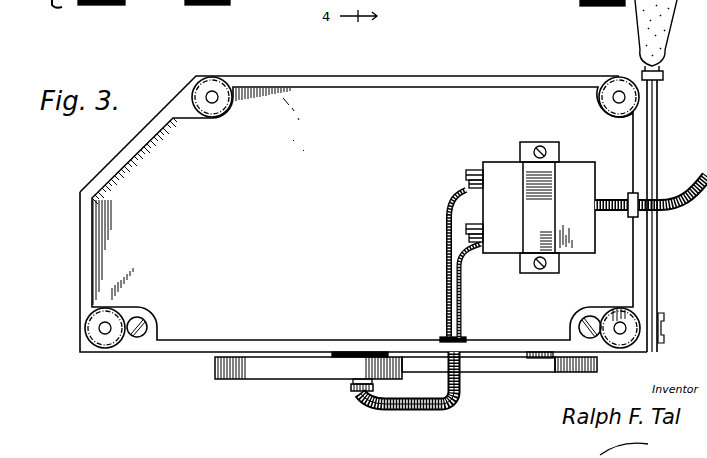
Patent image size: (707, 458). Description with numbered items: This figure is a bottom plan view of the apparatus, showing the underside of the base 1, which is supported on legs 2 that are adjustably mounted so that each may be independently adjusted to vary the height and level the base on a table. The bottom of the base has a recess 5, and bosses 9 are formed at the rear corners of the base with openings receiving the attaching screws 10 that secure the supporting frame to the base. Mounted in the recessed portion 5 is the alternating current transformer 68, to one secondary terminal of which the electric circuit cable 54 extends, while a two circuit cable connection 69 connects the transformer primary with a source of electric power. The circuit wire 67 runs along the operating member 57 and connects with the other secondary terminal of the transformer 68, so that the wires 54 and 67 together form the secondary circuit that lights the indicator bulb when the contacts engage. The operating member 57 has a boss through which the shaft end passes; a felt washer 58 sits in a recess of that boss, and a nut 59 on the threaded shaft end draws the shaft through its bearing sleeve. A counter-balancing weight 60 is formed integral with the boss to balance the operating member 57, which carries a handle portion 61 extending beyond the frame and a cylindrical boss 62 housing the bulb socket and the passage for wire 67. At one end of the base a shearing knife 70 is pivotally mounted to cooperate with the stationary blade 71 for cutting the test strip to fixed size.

The base 1 is at (297, 77).
The legs 2 is at (225, 78).
The recess 5 is at (110, 226).
The bosses 9 is at (138, 308).
The attaching screws 10 is at (138, 327).
The electric circuit cable 54 is at (453, 273).
The operating member 57 is at (511, 370).
The washer 58 is at (352, 352).
The nut 59 is at (348, 386).
The counter-balancing weight 60 is at (281, 368).
The handle portion 61 is at (583, 372).
The cylindrical boss 62 is at (541, 352).
The circuit wire 67 is at (447, 233).
The alternating current transformer 68 is at (504, 237).
The two circuit cable connection 69 is at (613, 201).
The shearing knife 70 is at (656, 110).
The stationary blade 71 is at (648, 135).